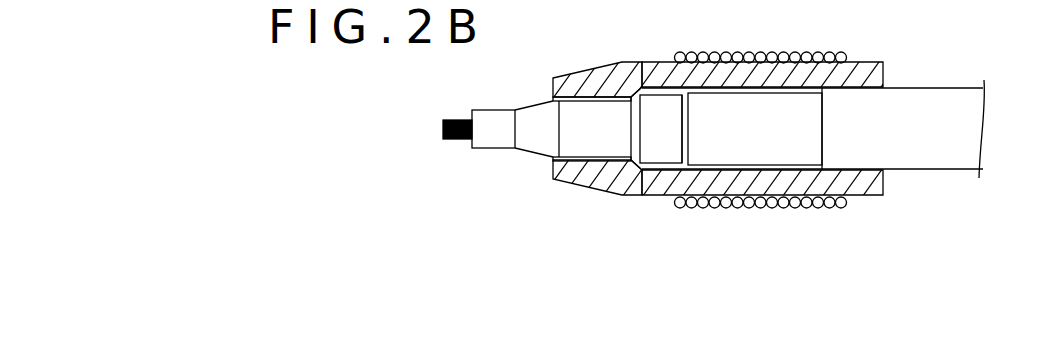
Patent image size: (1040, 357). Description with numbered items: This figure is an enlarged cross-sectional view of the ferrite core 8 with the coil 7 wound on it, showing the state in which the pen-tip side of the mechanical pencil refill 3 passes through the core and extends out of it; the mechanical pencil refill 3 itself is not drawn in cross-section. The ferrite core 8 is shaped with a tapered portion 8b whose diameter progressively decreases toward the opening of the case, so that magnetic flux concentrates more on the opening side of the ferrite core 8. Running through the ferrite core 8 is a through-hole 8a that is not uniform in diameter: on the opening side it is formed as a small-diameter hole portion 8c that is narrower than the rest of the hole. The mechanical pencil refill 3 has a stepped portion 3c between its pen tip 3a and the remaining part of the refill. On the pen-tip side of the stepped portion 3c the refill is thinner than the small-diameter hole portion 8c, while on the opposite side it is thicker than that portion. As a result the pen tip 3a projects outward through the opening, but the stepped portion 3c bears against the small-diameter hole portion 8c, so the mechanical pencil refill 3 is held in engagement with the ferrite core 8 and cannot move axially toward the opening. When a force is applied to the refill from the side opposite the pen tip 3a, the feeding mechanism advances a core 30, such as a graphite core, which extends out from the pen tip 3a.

The mechanical pencil refill 3 is at (940, 165).
The pen tip 3a is at (494, 117).
The stepped portion 3c is at (635, 147).
The coil 7 is at (738, 52).
The ferrite core 8 is at (856, 74).
The through-hole 8a is at (655, 85).
The tapered portion 8b is at (574, 76).
The small-diameter hole portion 8c is at (577, 190).
The core 30 is at (458, 143).